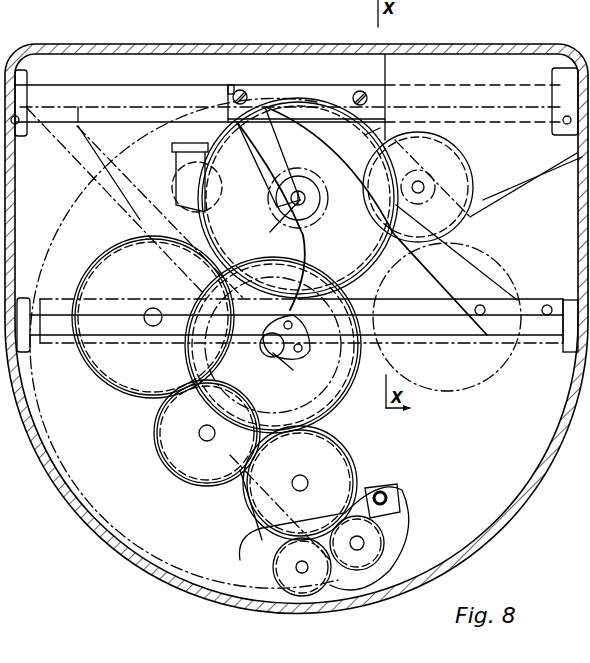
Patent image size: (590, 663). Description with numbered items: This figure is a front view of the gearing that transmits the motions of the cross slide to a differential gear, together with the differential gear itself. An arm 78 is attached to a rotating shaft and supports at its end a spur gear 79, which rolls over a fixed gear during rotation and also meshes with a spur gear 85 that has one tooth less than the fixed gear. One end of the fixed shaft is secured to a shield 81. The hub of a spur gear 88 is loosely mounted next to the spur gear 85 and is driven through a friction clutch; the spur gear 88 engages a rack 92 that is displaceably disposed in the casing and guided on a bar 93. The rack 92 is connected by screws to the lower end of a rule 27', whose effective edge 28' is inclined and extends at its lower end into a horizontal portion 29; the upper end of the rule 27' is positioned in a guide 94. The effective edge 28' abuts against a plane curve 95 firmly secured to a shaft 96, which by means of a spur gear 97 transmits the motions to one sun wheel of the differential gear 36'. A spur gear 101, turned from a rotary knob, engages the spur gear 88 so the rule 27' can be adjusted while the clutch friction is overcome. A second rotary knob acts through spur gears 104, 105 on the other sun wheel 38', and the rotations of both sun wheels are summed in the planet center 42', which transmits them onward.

The guide 94 is at (143, 97).
The arm 78 is at (232, 85).
The spur gear 88 is at (373, 134).
The spur gear 101 is at (430, 177).
The spur gear 79 is at (180, 163).
The shield 81 is at (268, 183).
The spur gear 85 is at (230, 222).
The plane curve 95 is at (334, 233).
The rule 27' is at (405, 221).
The effective edge 28' is at (483, 218).
The bar 93 is at (54, 333).
The spur gear 104 is at (104, 366).
The shaft 96 is at (285, 363).
The spur gear 97 is at (337, 408).
The spur gear 105 is at (160, 434).
The differential gear 36' is at (245, 507).
The sun wheel 38' is at (323, 483).
The planet center 42' is at (337, 540).
The rail bracket 29 is at (525, 336).
The rack 92 is at (467, 347).